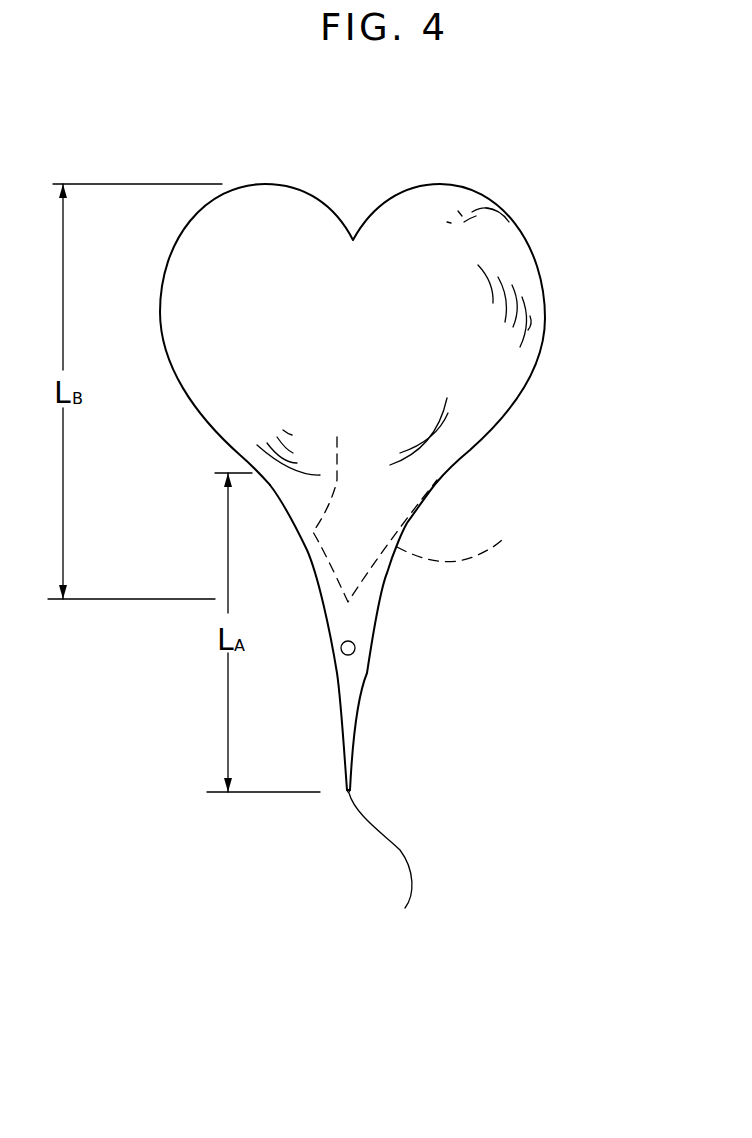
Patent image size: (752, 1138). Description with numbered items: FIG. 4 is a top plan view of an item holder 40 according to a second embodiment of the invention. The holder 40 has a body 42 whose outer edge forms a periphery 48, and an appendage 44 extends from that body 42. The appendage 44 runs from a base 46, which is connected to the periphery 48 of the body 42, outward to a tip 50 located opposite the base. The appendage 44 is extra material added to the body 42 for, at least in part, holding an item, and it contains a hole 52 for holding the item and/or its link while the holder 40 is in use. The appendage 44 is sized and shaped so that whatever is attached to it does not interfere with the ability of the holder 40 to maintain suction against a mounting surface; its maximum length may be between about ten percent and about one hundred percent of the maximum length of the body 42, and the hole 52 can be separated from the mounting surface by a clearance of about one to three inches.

The item holder 40 is at (505, 157).
The balloon body (heart-shaped lobes) 42 is at (295, 185).
The appendage 44 is at (381, 595).
The base 46 is at (375, 504).
The periphery 48 is at (457, 464).
The tip 50 is at (384, 868).
The hole 52 is at (355, 645).